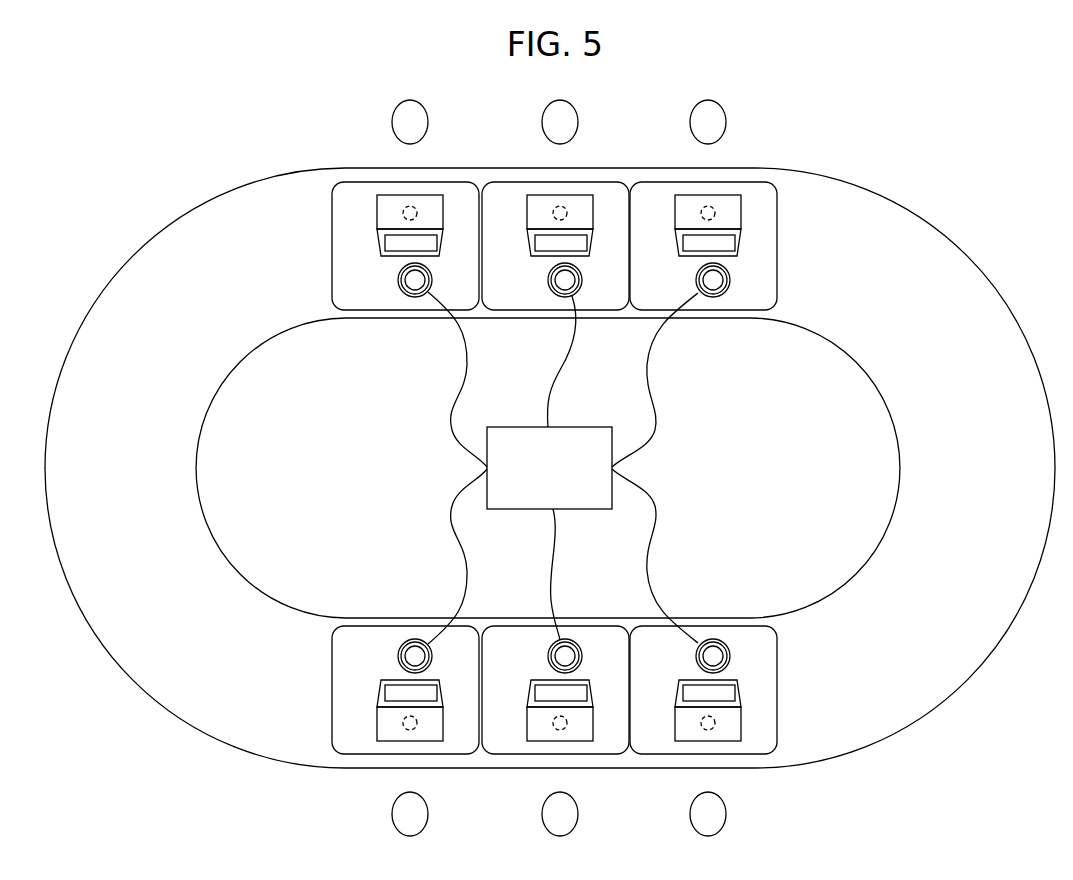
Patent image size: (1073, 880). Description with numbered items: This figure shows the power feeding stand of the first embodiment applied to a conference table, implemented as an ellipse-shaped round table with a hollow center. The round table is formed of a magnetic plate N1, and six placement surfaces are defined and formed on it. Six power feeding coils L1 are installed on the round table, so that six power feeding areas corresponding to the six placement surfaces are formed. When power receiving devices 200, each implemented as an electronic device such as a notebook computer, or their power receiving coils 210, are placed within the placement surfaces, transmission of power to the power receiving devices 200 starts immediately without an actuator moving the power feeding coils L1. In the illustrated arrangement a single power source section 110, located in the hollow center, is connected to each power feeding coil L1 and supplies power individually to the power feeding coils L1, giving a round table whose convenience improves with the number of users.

The magnetic plate N1 is at (866, 208).
The power feeding coil L1 is at (403, 294).
The power receiving device 200 is at (432, 197).
The power receiving coil 210 is at (405, 208).
The power source section 110 is at (516, 432).